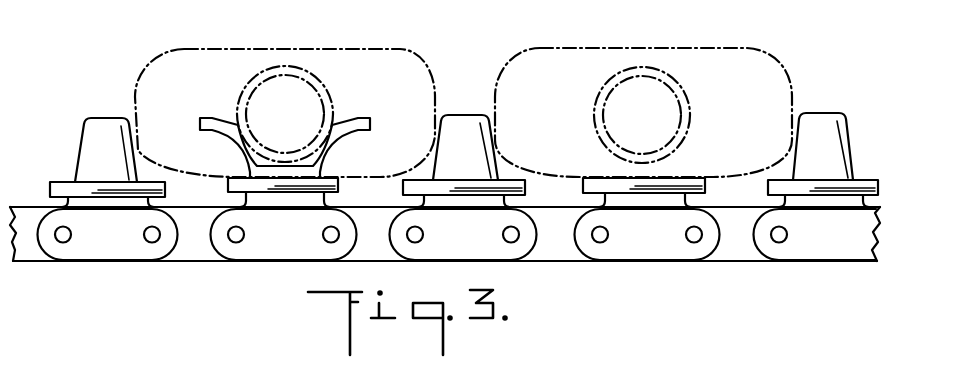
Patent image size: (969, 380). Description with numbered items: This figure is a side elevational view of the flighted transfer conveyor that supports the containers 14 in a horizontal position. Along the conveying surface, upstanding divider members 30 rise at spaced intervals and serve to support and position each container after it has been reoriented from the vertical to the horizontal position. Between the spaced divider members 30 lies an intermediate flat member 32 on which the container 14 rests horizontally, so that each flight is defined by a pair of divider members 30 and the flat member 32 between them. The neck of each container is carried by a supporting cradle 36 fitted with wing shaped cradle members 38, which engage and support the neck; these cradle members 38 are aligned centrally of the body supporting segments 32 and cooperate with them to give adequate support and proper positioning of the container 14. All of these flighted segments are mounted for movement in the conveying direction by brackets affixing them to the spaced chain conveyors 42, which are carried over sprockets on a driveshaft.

The flat-sided container 14 is at (365, 62).
The upstanding divider member 30 is at (97, 127).
The intermediate flat member 32 is at (50, 182).
The supporting cradle 36 is at (275, 192).
The wing shaped cradle member 38 is at (212, 122).
The chain conveyor 42 is at (60, 248).